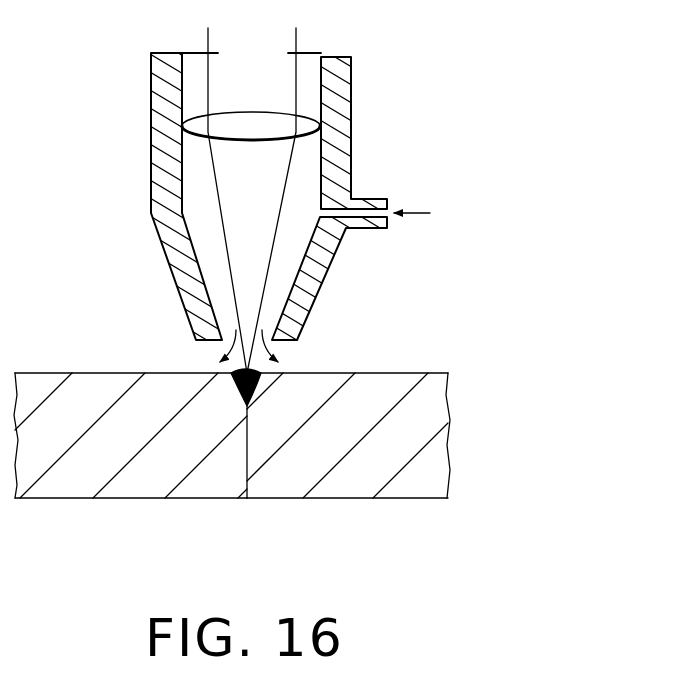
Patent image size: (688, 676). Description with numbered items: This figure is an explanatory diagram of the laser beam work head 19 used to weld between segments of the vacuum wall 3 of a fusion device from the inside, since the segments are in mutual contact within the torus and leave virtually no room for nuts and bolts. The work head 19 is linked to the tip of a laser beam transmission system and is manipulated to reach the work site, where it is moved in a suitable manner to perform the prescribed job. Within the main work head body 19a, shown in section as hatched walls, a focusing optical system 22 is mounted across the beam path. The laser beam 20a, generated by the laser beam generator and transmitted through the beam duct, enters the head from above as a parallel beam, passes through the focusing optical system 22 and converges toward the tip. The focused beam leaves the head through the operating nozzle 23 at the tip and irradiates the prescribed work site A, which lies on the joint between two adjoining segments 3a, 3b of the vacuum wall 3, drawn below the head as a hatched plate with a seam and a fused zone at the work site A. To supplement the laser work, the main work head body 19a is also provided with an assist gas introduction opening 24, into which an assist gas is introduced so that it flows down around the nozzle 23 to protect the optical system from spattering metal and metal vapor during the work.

The laser beam work head 19 is at (150, 102).
The main work head body 19a is at (352, 147).
The laser beam 20a is at (297, 37).
The focusing optical system 22 is at (290, 116).
The operating nozzle 23 is at (282, 345).
The assist gas introduction opening 24 is at (372, 198).
The vacuum wall 3 is at (216, 506).
The segment 3a is at (78, 373).
The segment 3b is at (408, 373).
The work site A is at (253, 372).